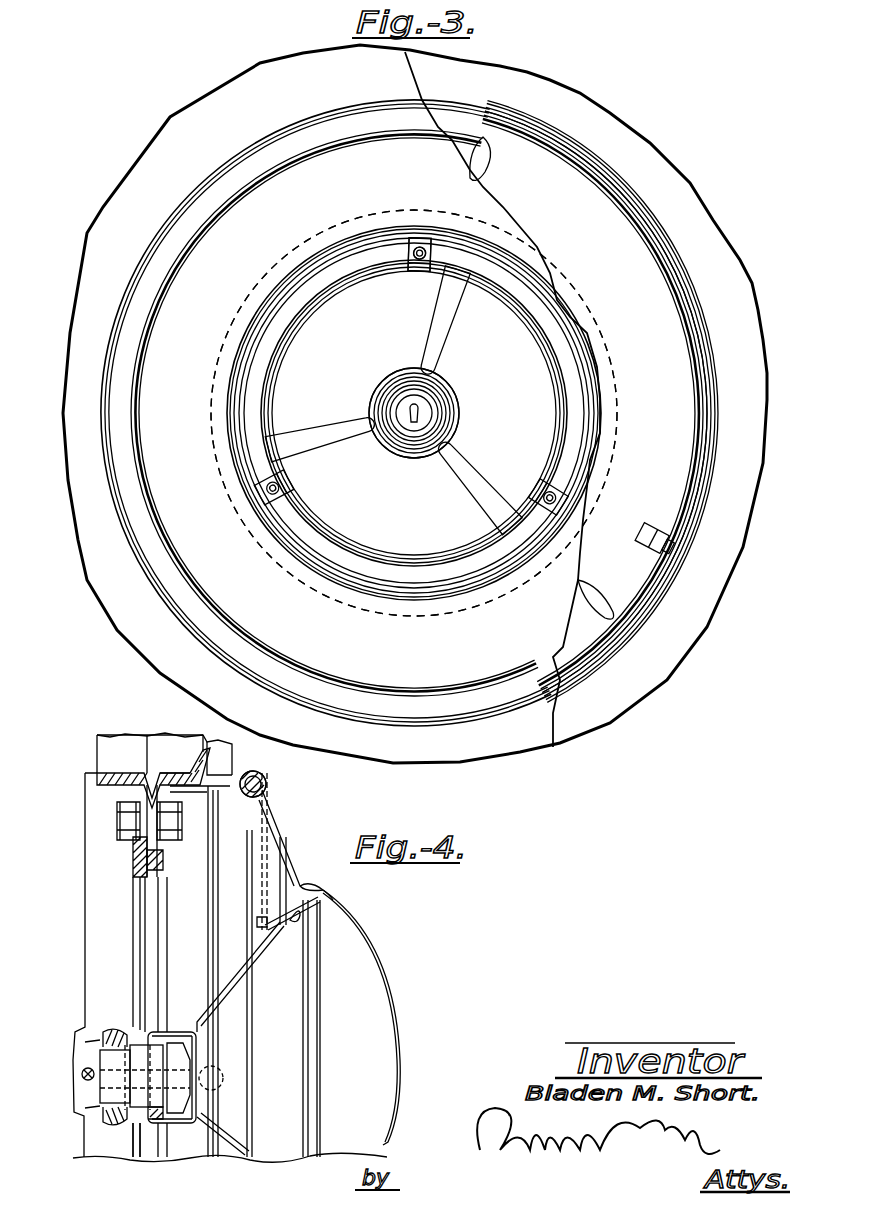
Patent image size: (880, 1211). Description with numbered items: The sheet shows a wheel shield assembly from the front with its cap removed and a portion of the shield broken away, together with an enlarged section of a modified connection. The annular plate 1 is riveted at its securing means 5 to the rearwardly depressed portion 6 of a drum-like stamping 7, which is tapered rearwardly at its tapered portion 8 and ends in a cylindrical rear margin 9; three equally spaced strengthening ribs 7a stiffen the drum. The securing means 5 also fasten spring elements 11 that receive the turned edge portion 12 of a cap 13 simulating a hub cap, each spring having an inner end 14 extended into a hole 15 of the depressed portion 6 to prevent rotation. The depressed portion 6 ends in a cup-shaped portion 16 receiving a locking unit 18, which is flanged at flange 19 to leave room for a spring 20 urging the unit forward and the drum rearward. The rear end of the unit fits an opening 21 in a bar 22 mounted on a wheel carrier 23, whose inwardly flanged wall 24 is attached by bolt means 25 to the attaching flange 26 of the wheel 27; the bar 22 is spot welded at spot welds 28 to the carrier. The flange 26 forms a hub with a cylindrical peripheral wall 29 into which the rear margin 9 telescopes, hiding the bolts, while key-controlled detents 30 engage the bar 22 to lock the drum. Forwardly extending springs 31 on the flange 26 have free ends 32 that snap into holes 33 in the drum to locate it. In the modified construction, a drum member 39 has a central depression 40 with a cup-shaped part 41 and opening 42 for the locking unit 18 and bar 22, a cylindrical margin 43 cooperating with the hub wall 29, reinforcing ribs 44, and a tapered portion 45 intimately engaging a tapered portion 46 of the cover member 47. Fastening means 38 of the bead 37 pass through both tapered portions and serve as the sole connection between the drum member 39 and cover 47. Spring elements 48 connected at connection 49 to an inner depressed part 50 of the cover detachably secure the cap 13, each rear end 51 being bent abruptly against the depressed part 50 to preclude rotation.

In FIG. 3, the plate 1 is at (222, 112).
In FIG. 3, the securing means 5 is at (410, 254).
In FIG. 3, the depressed portion 6 is at (417, 542).
In FIG. 3, the drum-like stamping 7 is at (612, 239).
In FIG. 3, the strengthening ribs 7a is at (478, 485).
In FIG. 3, the tapered portion 8 is at (663, 440).
In FIG. 3, the cylindrical rear margin 9 is at (690, 499).
In FIG. 3, the spring elements 11 is at (428, 272).
In FIG. 4, the turned edge portion 12 is at (315, 1050).
In FIG. 4, the cap 13 is at (380, 963).
In FIG. 3, the inner end 14 is at (421, 279).
In FIG. 3, the hole 15 is at (409, 278).
In FIG. 3, the cup-shaped portion 16 is at (449, 415).
In FIG. 3, the locking unit 18 is at (450, 432).
In FIG. 4, the locking unit 18 is at (177, 1060).
In FIG. 3, the flange 19 is at (437, 399).
In FIG. 4, the spring 20 is at (163, 1110).
In FIG. 4, the opening 21 is at (120, 1120).
In FIG. 4, the bar 22 is at (120, 1030).
In FIG. 4, the wheel carrier 23 is at (130, 761).
In FIG. 3, the inwardly flanged wall 24 is at (608, 362).
In FIG. 4, the inwardly flanged wall 24 is at (133, 850).
In FIG. 4, the bolt means 25 is at (120, 810).
In FIG. 3, the attaching flange 26 is at (414, 413).
In FIG. 4, the attaching flange 26 is at (163, 858).
In FIG. 3, the wheel 27 is at (722, 228).
In FIG. 4, the wheel 27 is at (163, 740).
In FIG. 4, the spot welds 28 is at (85, 1075).
In FIG. 3, the cylindrical peripheral wall 29 is at (698, 452).
In FIG. 4, the cylindrical peripheral wall 29 is at (178, 761).
In FIG. 4, the detents 30 is at (90, 1041).
In FIG. 4, the springs 31 is at (266, 785).
In FIG. 3, the free ends 32 is at (640, 541).
In FIG. 3, the holes 33 is at (665, 528).
In FIG. 3, the bead 37 is at (222, 180).
In FIG. 4, the fastening means 38 is at (262, 774).
In FIG. 4, the drum member 39 is at (268, 873).
In FIG. 4, the central depression 40 is at (200, 1150).
In FIG. 4, the cup-shaped part 41 is at (190, 1032).
In FIG. 4, the opening 42 is at (142, 1157).
In FIG. 4, the cylindrical margin 43 is at (187, 903).
In FIG. 4, the reinforcing ribs 44 is at (228, 960).
In FIG. 4, the tapered portion 45 is at (272, 812).
In FIG. 4, the tapered portion 46 is at (232, 760).
In FIG. 4, the cover member 47 is at (295, 838).
In FIG. 4, the spring elements 48 is at (338, 920).
In FIG. 4, the connection 49 is at (290, 920).
In FIG. 4, the inner depressed part 50 is at (262, 920).
In FIG. 4, the rear end 51 is at (274, 955).